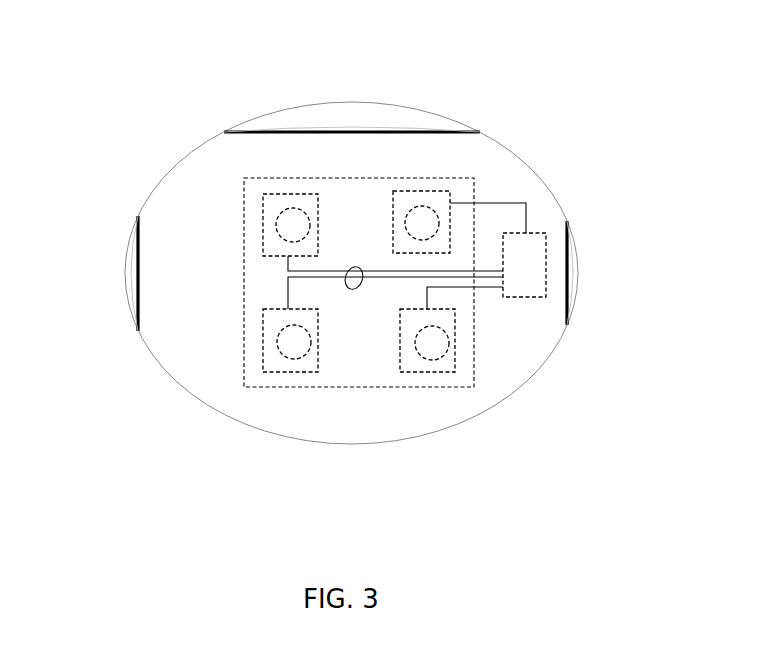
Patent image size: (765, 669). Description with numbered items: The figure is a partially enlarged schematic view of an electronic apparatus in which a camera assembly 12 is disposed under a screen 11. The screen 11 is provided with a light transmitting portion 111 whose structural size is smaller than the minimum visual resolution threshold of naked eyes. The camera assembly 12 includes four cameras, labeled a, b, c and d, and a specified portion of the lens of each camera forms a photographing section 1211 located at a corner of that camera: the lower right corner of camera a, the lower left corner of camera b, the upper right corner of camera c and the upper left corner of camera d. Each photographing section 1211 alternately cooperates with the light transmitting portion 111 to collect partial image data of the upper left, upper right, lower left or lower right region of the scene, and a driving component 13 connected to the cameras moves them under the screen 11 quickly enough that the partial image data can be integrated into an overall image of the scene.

The screen 11 is at (335, 130).
The camera assembly 12 is at (243, 253).
The driving component 13 is at (530, 275).
The light transmitting portion 111 is at (364, 276).
The photographing section 1211 is at (310, 229).